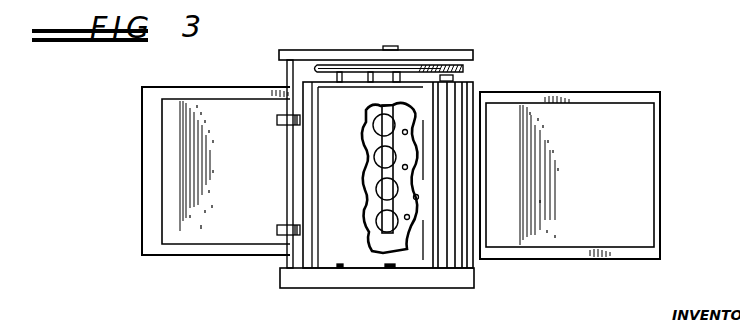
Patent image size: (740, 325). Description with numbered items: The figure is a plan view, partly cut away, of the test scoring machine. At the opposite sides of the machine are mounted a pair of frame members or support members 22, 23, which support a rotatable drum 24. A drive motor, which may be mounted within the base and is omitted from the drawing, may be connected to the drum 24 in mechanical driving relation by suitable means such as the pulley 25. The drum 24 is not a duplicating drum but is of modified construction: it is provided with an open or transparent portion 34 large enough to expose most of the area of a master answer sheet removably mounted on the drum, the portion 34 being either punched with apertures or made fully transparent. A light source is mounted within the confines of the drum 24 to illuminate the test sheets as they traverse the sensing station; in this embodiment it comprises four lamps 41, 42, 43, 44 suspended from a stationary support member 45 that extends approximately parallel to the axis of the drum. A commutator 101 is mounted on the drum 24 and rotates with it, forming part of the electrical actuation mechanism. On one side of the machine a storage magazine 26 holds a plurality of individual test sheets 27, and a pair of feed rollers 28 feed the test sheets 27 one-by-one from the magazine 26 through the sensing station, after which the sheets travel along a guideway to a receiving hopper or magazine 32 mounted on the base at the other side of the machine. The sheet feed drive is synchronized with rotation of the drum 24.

The frame member 22 is at (432, 55).
The frame member 23 is at (417, 290).
The rotatable drum 24 is at (313, 82).
The pulley 25 is at (389, 72).
The commutator 101 is at (357, 75).
The storage magazine 26 is at (202, 249).
The test sheets 27 is at (165, 198).
The feed rollers 28 is at (277, 120).
The receiving hopper 32 is at (628, 196).
The open or transparent portion 34 is at (387, 248).
The lamp 41 is at (380, 220).
The lamp 42 is at (377, 191).
The lamp 43 is at (380, 157).
The lamp 44 is at (377, 124).
The stationary support member 45 is at (388, 173).